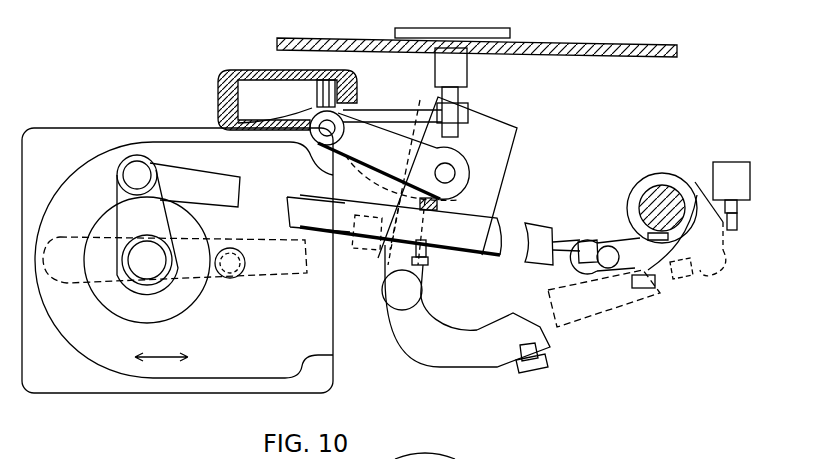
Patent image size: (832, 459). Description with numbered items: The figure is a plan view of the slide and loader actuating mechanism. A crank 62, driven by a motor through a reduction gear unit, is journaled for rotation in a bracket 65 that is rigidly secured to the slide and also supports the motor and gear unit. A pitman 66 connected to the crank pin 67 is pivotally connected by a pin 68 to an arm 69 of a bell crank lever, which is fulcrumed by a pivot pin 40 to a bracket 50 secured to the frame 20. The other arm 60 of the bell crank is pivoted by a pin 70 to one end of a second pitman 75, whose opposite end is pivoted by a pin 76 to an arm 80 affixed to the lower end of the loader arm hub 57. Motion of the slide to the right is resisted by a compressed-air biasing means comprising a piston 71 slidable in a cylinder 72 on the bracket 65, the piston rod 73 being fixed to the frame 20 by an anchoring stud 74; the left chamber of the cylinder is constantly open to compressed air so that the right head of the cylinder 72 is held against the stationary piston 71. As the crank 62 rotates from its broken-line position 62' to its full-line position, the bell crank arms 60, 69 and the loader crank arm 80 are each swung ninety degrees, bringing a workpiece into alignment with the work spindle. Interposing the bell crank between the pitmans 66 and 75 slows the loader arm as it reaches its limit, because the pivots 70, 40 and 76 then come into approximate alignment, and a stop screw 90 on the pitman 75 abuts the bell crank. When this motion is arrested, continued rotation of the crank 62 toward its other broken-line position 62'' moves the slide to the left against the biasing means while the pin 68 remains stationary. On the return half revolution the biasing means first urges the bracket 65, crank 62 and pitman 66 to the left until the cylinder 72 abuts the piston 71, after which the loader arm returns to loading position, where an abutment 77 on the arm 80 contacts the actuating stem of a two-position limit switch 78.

The frame 20 is at (563, 52).
The pivot pin 40 is at (480, 168).
The bracket 50 is at (490, 127).
The loader arm hub 57 is at (663, 190).
The bell crank arm 60 is at (372, 140).
The crank 62 is at (126, 232).
The crank broken-line position 62' is at (234, 277).
The crank broken-line position 62'' is at (175, 275).
The bracket 65 is at (226, 337).
The pitman 66 is at (293, 203).
The crank pin 67 is at (137, 172).
The pin 68 is at (380, 252).
The bell crank arm 69 is at (447, 173).
The pin 70 is at (328, 127).
The piston 71 is at (329, 86).
The cylinder 72 is at (268, 88).
The piston rod 73 is at (397, 107).
The anchoring stud 74 is at (460, 70).
The pitman 75 is at (530, 262).
The pin 76 is at (608, 253).
The abutment 77 is at (737, 224).
The two-position limit switch 78 is at (735, 165).
The arm 80 is at (657, 252).
The stop screw 90 is at (440, 205).